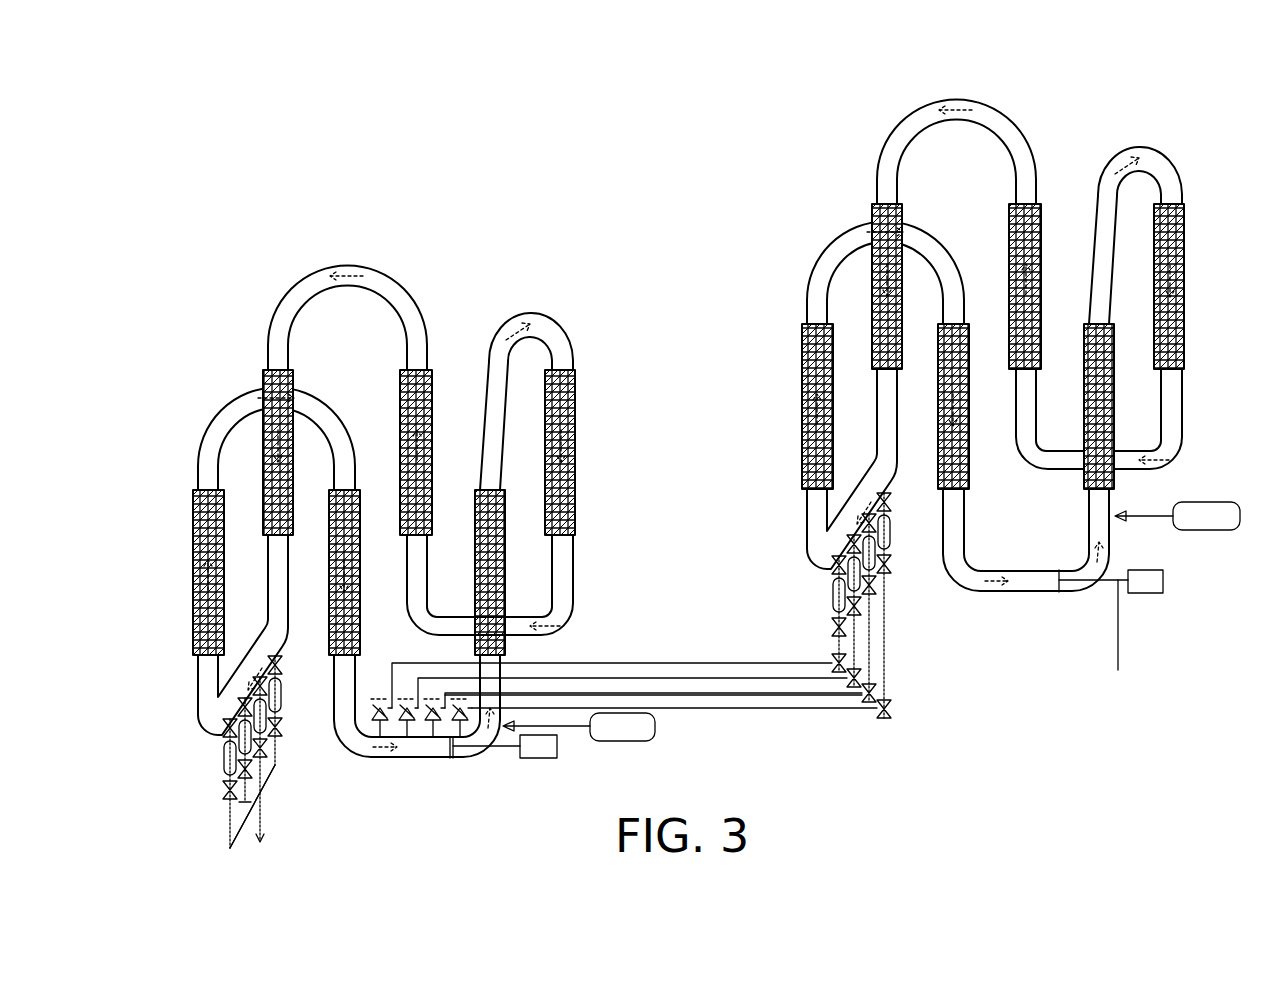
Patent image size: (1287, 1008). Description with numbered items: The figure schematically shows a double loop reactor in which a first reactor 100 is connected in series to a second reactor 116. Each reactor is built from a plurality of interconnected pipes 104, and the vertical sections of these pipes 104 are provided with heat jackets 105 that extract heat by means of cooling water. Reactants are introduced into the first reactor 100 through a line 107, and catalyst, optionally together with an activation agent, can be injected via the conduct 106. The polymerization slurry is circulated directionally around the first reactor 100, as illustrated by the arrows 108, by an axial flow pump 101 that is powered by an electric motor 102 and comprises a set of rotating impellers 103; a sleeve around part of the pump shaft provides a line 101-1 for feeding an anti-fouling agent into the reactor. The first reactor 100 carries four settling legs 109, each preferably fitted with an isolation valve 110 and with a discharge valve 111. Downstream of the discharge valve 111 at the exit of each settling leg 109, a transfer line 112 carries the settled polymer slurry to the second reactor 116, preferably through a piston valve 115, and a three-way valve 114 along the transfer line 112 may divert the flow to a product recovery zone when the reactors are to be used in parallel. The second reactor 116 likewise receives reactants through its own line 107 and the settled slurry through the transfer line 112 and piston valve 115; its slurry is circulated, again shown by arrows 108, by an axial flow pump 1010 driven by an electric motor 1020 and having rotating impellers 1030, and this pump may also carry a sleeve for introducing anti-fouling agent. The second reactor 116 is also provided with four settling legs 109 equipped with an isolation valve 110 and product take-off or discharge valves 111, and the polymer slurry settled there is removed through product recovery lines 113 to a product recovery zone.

The first reactor 100 is at (1239, 175).
The axial flow pump 101 is at (1106, 583).
The line for feeding the anti-fouling agent 101-1 is at (1119, 645).
The electric motor 102 is at (1150, 594).
The rotating impellers 103 is at (1058, 592).
The interconnected pipes 104 is at (575, 572).
The heat jackets 105 is at (577, 468).
The conduct 106 is at (397, 766).
The line 107 is at (575, 742).
The arrows 108 is at (508, 346).
The settling legs 109 is at (224, 768).
The isolation valve 110 is at (282, 665).
The discharge valves 111 is at (282, 730).
The transfer line 112 is at (678, 660).
The product recovery lines 113 is at (252, 820).
The three-way valve 114 is at (892, 710).
The piston valve 115 is at (390, 704).
The second reactor 116 is at (629, 333).
The axial flow pump 1010 is at (486, 750).
The electric motor 1020 is at (540, 760).
The rotating impellers 1030 is at (447, 760).